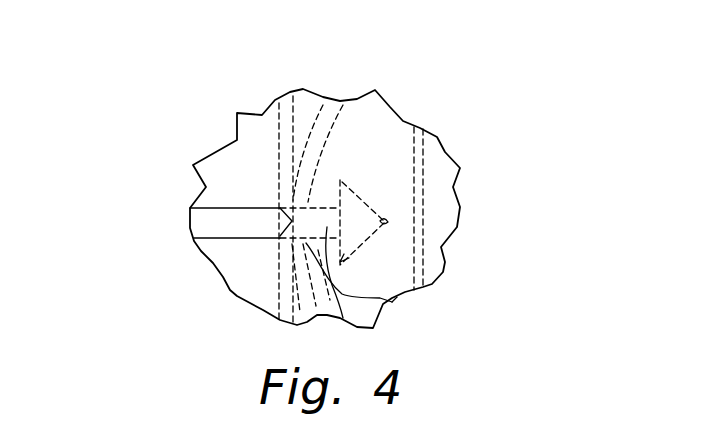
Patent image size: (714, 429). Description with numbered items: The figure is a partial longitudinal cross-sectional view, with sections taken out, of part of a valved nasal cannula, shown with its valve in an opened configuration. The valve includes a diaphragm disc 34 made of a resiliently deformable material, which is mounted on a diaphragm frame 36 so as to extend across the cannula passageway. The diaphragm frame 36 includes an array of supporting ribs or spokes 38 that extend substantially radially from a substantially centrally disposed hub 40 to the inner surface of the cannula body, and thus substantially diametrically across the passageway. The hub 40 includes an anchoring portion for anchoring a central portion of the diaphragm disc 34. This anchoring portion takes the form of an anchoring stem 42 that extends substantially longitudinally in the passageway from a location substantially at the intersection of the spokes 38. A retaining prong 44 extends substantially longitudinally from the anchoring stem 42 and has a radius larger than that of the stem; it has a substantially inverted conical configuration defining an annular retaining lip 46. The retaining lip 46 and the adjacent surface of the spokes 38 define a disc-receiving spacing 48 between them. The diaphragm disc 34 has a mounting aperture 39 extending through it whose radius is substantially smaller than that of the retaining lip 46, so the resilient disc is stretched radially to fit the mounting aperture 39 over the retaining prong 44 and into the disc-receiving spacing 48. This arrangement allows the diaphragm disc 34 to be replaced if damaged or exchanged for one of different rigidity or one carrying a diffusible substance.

The diaphragm disc 34 is at (330, 102).
The diaphragm frame 36 is at (286, 117).
The spokes 38 is at (237, 114).
The mounting aperture 39 is at (343, 318).
The hub 40 is at (252, 212).
The anchoring stem 42 is at (391, 301).
The retaining prong 44 is at (388, 222).
The retaining lip 46 is at (342, 180).
The disc-receiving spacing 48 is at (338, 190).